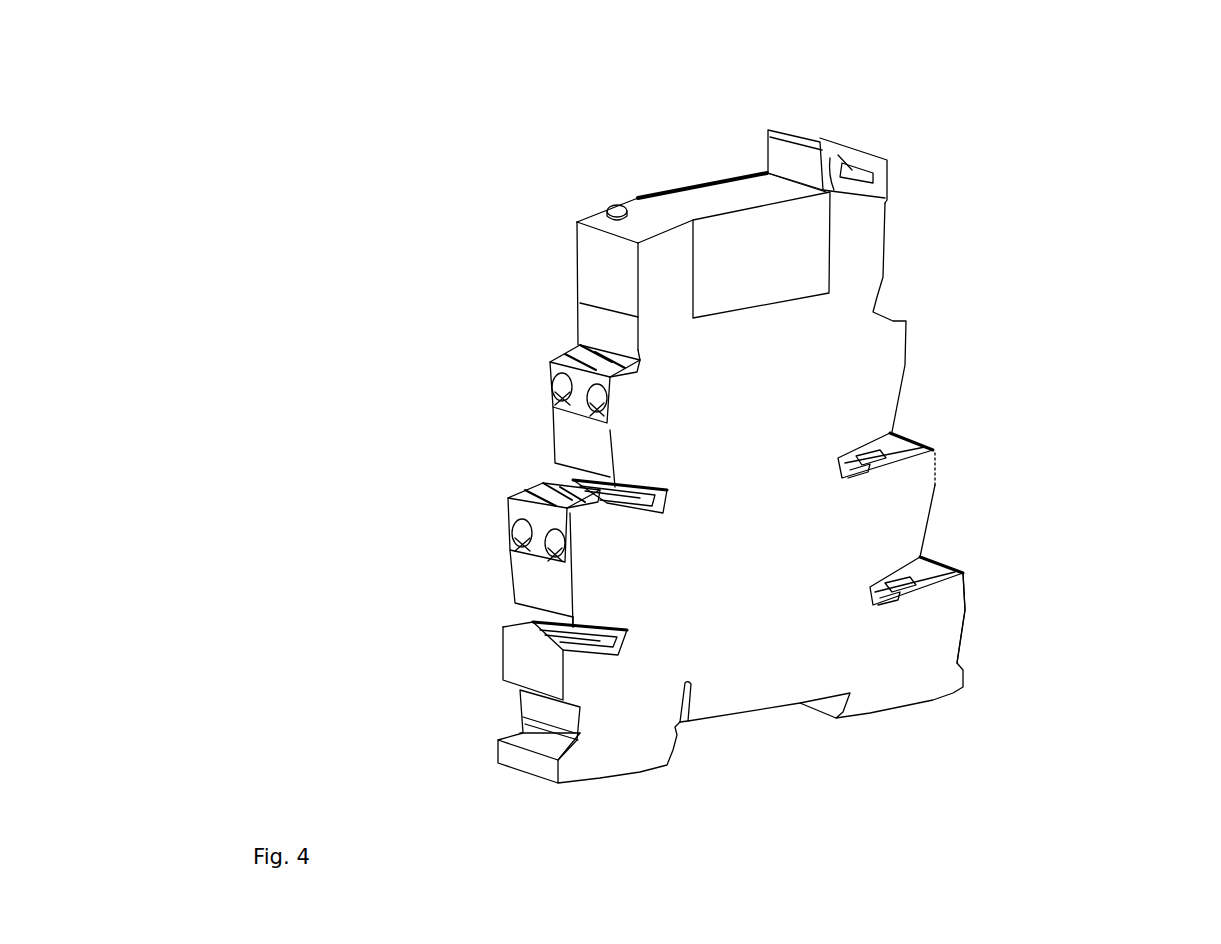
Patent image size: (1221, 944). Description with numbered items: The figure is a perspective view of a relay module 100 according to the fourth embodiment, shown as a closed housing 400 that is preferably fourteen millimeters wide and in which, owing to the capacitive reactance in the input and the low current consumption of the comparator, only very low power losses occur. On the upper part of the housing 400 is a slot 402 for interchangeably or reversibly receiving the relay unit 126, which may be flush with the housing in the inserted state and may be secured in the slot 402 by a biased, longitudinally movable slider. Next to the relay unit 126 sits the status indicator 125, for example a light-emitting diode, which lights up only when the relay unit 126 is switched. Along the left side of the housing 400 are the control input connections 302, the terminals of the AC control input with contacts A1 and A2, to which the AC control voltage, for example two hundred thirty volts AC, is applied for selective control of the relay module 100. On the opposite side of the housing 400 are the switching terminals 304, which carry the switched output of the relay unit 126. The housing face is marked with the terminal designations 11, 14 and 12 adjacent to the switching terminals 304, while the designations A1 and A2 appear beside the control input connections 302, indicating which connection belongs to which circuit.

The relay module 100 is at (302, 50).
The slot 402 is at (735, 128).
The status indicator 125 is at (612, 205).
The relay unit 126 is at (690, 187).
The housing 400 is at (658, 315).
The switching terminals 304 is at (955, 552).
The control input connections 302 is at (553, 382).
The terminal 11 is at (868, 317).
The terminal 14 is at (896, 505).
The terminal 12 is at (929, 618).
The contact A1 is at (660, 390).
The contact A2 is at (610, 593).